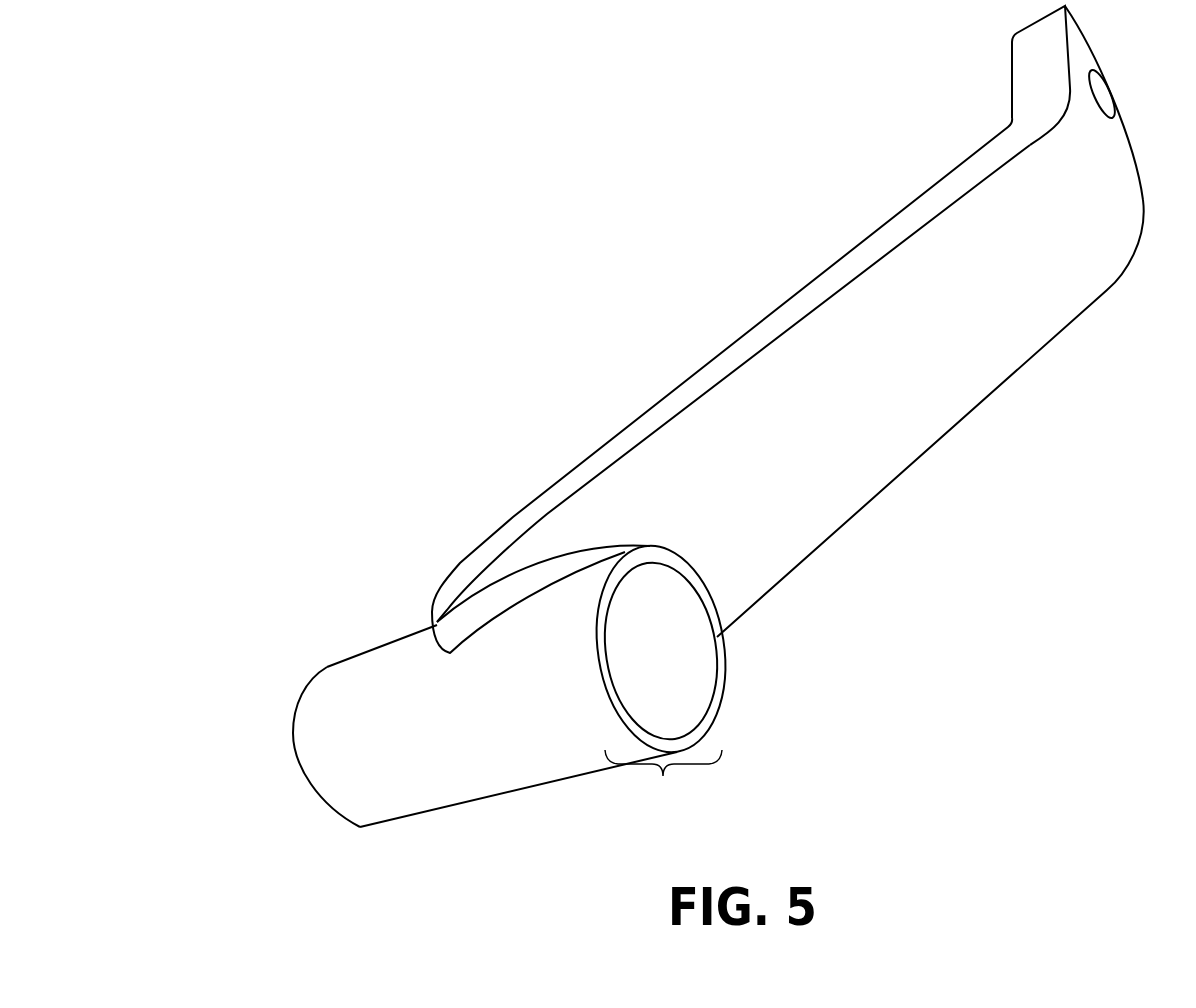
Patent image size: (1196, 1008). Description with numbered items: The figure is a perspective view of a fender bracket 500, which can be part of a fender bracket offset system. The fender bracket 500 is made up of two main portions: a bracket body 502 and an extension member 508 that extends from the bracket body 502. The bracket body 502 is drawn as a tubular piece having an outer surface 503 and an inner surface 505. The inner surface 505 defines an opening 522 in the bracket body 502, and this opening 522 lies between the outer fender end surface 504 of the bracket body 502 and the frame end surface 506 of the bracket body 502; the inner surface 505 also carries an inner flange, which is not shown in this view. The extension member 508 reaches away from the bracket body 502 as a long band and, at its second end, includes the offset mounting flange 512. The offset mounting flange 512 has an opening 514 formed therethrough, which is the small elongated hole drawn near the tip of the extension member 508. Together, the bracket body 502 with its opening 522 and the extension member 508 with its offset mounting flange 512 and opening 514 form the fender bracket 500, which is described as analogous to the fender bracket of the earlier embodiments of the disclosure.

The fender bracket 500 is at (432, 100).
The bracket body 502 is at (432, 675).
The outer surface 503 is at (478, 765).
The outer fender end surface 504 is at (723, 670).
The inner surface 505 is at (692, 710).
The frame end surface 506 is at (292, 733).
The extension member 508 is at (750, 403).
The offset mounting flange 512 is at (1018, 64).
The opening 514 is at (1114, 70).
The opening 522 is at (663, 785).